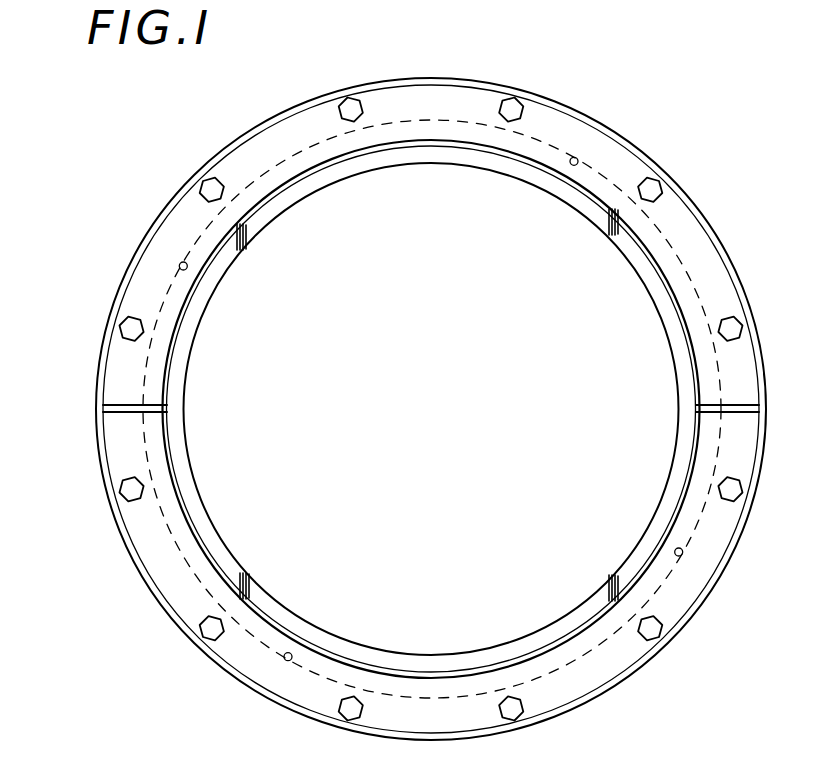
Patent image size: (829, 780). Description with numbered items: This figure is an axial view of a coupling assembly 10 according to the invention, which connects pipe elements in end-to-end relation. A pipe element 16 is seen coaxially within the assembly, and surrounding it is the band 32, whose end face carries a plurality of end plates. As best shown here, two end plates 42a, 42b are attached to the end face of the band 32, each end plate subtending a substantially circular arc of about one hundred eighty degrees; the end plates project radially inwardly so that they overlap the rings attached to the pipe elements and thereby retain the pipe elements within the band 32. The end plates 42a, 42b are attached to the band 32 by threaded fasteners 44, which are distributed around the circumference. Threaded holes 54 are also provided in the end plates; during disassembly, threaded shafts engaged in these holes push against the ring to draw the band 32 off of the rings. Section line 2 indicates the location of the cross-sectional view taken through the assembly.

The coupling assembly 10 is at (431, 383).
The pipe element 16 is at (196, 490).
The band 32 is at (592, 120).
The end plate 42a is at (437, 98).
The end plate 42b is at (590, 677).
The threaded fasteners 44 is at (506, 110).
The threaded holes 54 is at (178, 268).
The section line 2- 2 is at (220, 125).